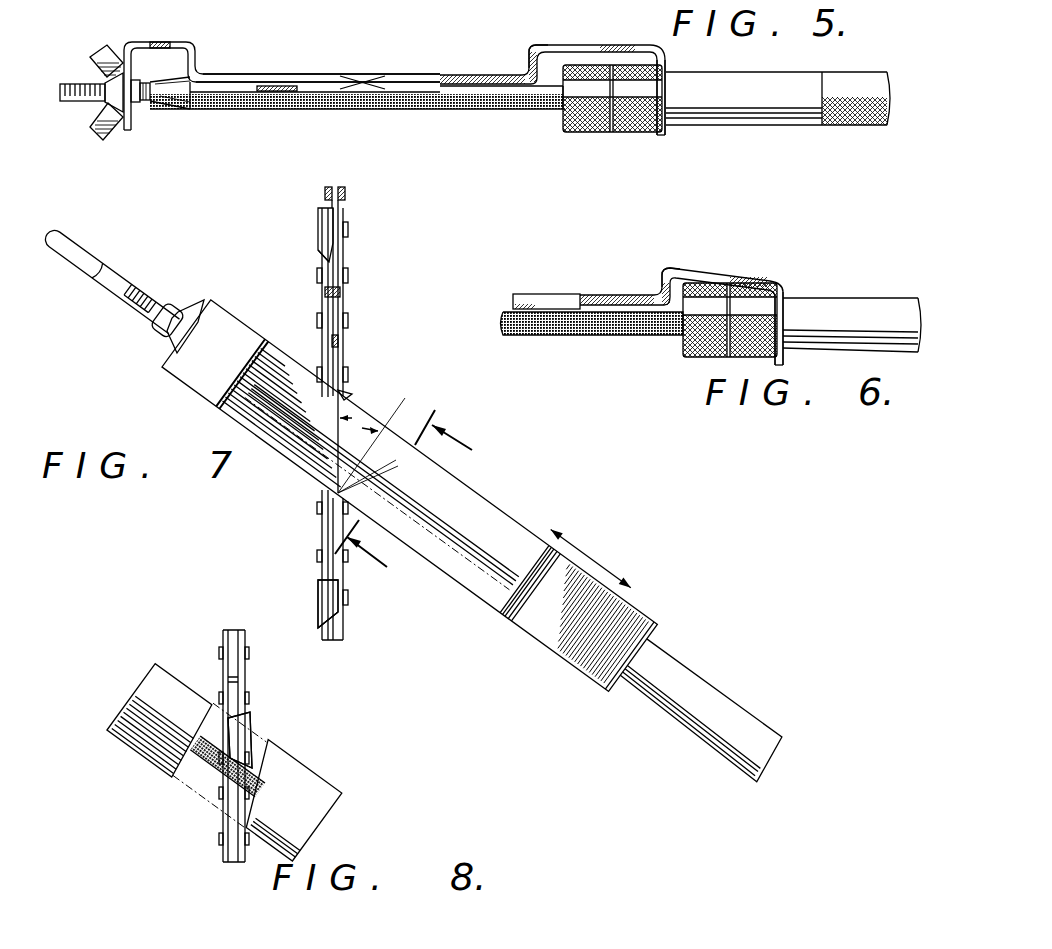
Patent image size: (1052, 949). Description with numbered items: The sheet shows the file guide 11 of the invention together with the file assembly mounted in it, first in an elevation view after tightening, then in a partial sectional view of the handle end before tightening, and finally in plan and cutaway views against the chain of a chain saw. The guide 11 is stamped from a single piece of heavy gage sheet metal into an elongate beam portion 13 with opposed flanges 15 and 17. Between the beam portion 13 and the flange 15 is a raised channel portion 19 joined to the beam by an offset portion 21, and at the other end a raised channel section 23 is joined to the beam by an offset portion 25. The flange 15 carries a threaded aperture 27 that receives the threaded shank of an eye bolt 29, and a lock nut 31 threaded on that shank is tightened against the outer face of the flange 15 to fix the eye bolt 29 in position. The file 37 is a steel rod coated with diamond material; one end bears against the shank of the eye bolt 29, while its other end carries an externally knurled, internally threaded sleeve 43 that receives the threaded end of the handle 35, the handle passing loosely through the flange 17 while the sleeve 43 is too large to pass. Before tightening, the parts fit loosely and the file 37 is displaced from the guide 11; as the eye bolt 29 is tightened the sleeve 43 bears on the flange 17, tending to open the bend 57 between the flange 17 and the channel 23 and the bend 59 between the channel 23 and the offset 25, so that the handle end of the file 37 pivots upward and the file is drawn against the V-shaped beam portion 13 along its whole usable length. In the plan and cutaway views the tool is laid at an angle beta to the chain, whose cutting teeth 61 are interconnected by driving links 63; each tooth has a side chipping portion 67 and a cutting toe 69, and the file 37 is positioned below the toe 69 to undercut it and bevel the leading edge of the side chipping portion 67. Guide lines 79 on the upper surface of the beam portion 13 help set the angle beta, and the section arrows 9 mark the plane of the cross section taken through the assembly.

In FIG. 5, the guide 11 is at (388, 33).
In FIG. 6, the guide 11 is at (552, 268).
In FIG. 7, the guide 11 is at (505, 507).
In FIG. 8, the guide 11 is at (337, 785).
In FIG. 5, the beam portion 13 is at (308, 84).
In FIG. 6, the beam portion 13 is at (528, 296).
In FIG. 7, the beam portion 13 is at (472, 585).
In FIG. 8, the beam portion 13 is at (307, 783).
In FIG. 5, the flange 15 is at (128, 124).
In FIG. 5, the flange 17 is at (668, 92).
In FIG. 6, the flange 17 is at (787, 316).
In FIG. 5, the raised channel portion 19 is at (147, 41).
In FIG. 7, the raised channel portion 19 is at (200, 377).
In FIG. 8, the raised channel portion 19 is at (163, 720).
In FIG. 5, the offset portion 21 is at (194, 58).
In FIG. 5, the raised channel section 23 is at (607, 47).
In FIG. 6, the raised channel section 23 is at (722, 250).
In FIG. 7, the raised channel section 23 is at (628, 618).
In FIG. 5, the offset portion 25 is at (532, 62).
In FIG. 6, the offset portion 25 is at (655, 284).
In FIG. 5, the threaded aperture 27 is at (135, 81).
In FIG. 5, the eye bolt 29 is at (72, 84).
In FIG. 7, the eye bolt 29 is at (90, 262).
In FIG. 5, the lock nut 31 is at (102, 53).
In FIG. 7, the lock nut 31 is at (190, 290).
In FIG. 5, the handle 35 is at (728, 120).
In FIG. 6, the handle 35 is at (870, 300).
In FIG. 7, the handle 35 is at (690, 668).
In FIG. 5, the file 37 is at (287, 108).
In FIG. 6, the file 37 is at (575, 332).
In FIG. 8, the file 37 is at (207, 770).
In FIG. 5, the sleeve 43 is at (580, 127).
In FIG. 6, the sleeve 43 is at (683, 340).
In FIG. 5, the bend 57 is at (667, 58).
In FIG. 6, the bend 57 is at (784, 285).
In FIG. 5, the bend 59 is at (537, 47).
In FIG. 6, the bend 59 is at (662, 270).
In FIG. 7, the cutting teeth 61 is at (318, 232).
In FIG. 8, the cutting teeth 61 is at (253, 720).
In FIG. 7, the driving links 63 is at (325, 525).
In FIG. 8, the driving links 63 is at (226, 662).
In FIG. 7, the side chipping portion 67 is at (320, 258).
In FIG. 7, the cutting toe 69 is at (318, 606).
In FIG. 8, the cutting toe 69 is at (240, 747).
In FIG. 7, the guide lines 79 is at (400, 468).
In FIG. 7, the section line 9 is at (413, 496).